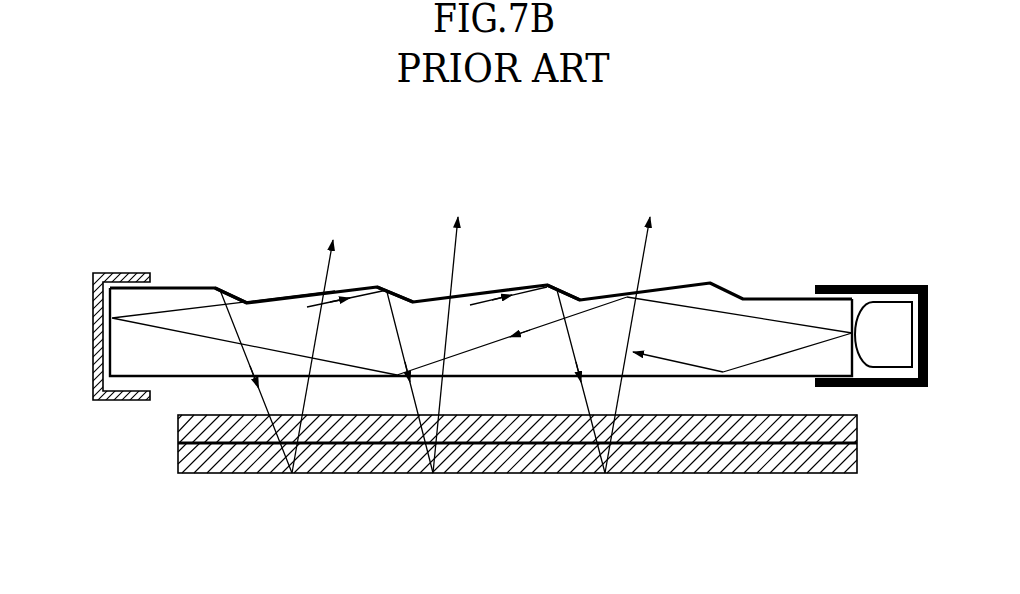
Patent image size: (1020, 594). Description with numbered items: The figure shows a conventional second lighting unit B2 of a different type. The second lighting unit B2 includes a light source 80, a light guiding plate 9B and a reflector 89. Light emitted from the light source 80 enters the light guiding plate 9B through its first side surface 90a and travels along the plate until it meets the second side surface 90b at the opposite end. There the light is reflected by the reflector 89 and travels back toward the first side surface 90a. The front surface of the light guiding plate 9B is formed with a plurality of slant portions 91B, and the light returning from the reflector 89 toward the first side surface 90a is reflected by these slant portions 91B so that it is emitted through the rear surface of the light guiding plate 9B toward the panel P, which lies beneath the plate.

The second lighting unit B2 is at (214, 197).
The light guiding plate 9B is at (694, 281).
The slant portions 91B is at (222, 289).
The reflector 89 is at (122, 276).
The second side surface 90b is at (97, 327).
The first side surface 90a is at (858, 292).
The light source 80 is at (892, 313).
The panel P is at (472, 479).